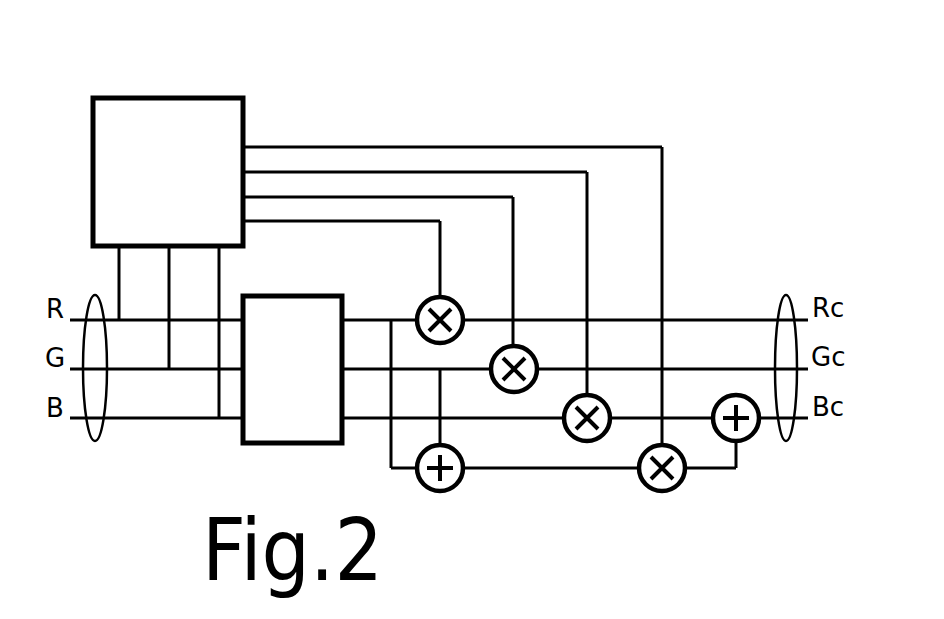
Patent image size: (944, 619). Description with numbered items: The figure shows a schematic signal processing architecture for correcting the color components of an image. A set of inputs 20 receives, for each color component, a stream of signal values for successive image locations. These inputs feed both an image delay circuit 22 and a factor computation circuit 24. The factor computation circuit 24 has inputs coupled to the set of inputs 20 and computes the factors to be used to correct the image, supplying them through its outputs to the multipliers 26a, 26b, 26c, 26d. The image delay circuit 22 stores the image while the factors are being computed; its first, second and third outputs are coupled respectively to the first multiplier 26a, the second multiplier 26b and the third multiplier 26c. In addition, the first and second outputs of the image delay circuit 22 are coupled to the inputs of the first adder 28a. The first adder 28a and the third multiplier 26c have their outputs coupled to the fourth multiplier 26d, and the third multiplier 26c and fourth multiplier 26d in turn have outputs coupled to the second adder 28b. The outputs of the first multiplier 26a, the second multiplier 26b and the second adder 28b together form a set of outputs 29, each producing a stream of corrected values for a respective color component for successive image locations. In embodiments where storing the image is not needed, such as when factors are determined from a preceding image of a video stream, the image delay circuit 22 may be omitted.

The set of inputs 20 is at (96, 441).
The image delay circuit 22 is at (305, 296).
The factor computation circuit 24 is at (196, 98).
The first multiplier 26a is at (462, 304).
The second multiplier 26b is at (515, 393).
The third multiplier 26c is at (589, 442).
The fourth multiplier 26d is at (663, 492).
The first adder 28a is at (441, 492).
The second adder 28b is at (738, 393).
The set of outputs 29 is at (786, 441).